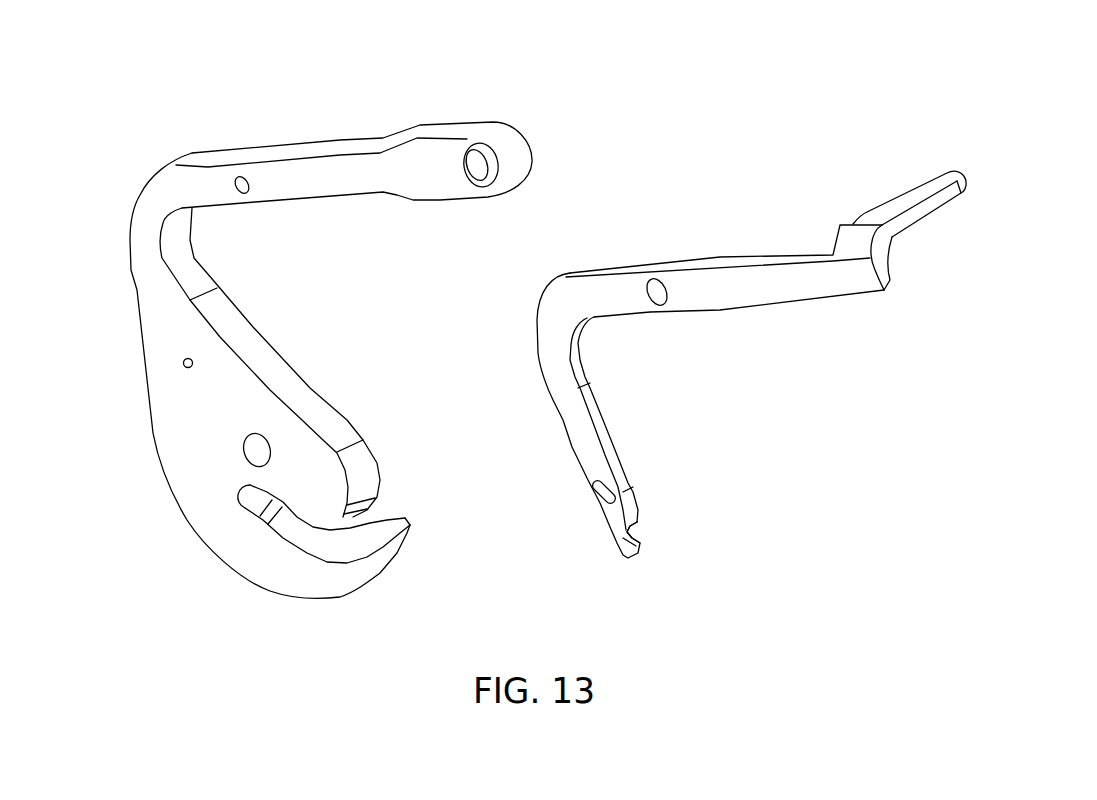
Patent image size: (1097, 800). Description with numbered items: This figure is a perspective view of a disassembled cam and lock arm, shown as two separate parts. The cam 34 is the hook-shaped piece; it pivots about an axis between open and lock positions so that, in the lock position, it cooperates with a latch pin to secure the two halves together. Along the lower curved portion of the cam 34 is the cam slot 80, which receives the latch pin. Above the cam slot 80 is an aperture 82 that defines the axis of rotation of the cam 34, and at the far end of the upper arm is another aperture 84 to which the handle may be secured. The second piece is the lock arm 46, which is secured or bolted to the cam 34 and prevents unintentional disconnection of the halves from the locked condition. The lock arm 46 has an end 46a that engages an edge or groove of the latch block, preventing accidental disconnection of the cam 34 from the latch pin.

The cam 34 is at (275, 582).
The lock arm 46 is at (716, 280).
The end 46a is at (636, 530).
The cam slot 80 is at (257, 512).
The aperture 82 is at (255, 446).
The aperture 84 is at (478, 165).